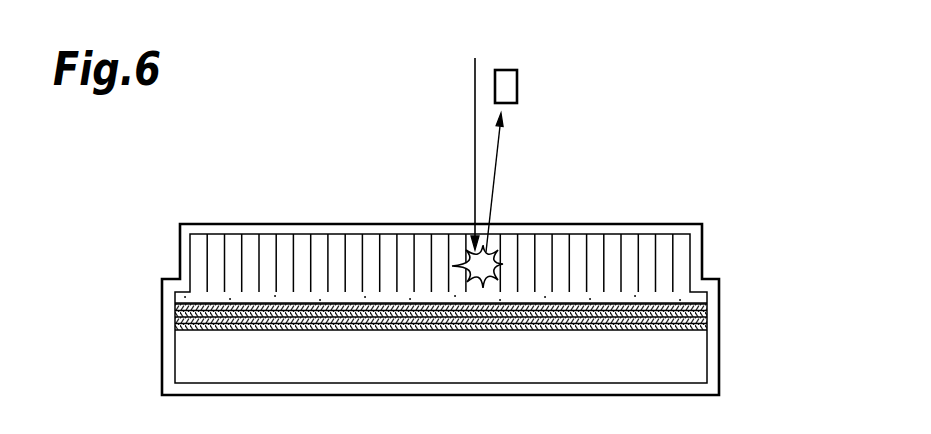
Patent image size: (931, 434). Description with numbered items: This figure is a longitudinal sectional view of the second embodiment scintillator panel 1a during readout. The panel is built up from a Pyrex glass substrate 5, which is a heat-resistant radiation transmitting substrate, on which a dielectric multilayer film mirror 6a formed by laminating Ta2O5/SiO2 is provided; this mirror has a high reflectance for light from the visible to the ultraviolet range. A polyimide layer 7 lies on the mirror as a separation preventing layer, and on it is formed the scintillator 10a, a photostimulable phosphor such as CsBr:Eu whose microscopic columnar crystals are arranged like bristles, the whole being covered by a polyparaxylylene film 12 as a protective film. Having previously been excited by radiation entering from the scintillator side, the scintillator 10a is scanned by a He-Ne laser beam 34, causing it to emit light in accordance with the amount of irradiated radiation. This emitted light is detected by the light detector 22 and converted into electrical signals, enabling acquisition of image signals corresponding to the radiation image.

The scintillator panel 1a is at (704, 179).
The polyparaxylylene film 12 is at (636, 224).
The scintillator 10a is at (680, 261).
The polyimide layer 7 is at (700, 295).
The dielectric multilayer film mirror 6a is at (708, 303).
The Pyrex glass substrate 5 is at (697, 353).
The He-Ne laser beam 34 is at (476, 140).
The light detector 22 is at (517, 86).